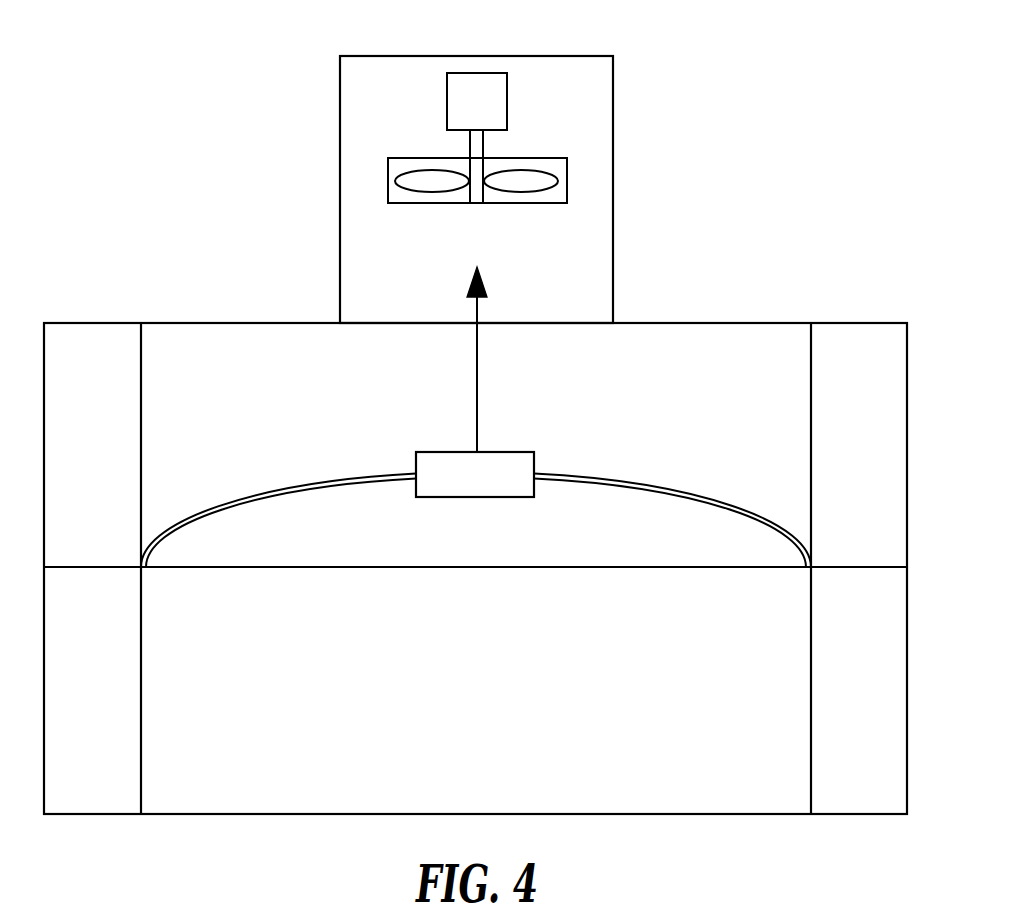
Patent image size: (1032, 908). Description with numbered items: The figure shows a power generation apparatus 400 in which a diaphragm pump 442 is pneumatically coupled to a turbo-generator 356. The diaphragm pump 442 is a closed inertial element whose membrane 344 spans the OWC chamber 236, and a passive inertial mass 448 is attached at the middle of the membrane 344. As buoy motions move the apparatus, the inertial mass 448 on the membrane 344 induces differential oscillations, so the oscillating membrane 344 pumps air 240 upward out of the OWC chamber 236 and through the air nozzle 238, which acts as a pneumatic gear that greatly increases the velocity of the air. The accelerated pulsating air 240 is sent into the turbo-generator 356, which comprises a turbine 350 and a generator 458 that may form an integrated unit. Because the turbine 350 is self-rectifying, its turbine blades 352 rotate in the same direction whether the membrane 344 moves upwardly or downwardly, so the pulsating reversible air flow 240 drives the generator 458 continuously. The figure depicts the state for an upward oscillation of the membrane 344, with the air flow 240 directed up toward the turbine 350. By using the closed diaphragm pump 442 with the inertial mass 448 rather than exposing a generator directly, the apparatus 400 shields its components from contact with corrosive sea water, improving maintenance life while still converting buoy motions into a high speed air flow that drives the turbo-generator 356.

The power generation apparatus 400 is at (812, 42).
The OWC chamber 236 is at (727, 323).
The air nozzle 238 is at (477, 56).
The pulsating air 240 is at (477, 357).
The membrane 344 is at (682, 488).
The turbine 350 is at (527, 203).
The turbine blades 352 is at (433, 170).
The turbo-generator 356 is at (507, 163).
The diaphragm pump 442 is at (657, 407).
The inertial mass 448 is at (505, 452).
The generator 458 is at (507, 100).